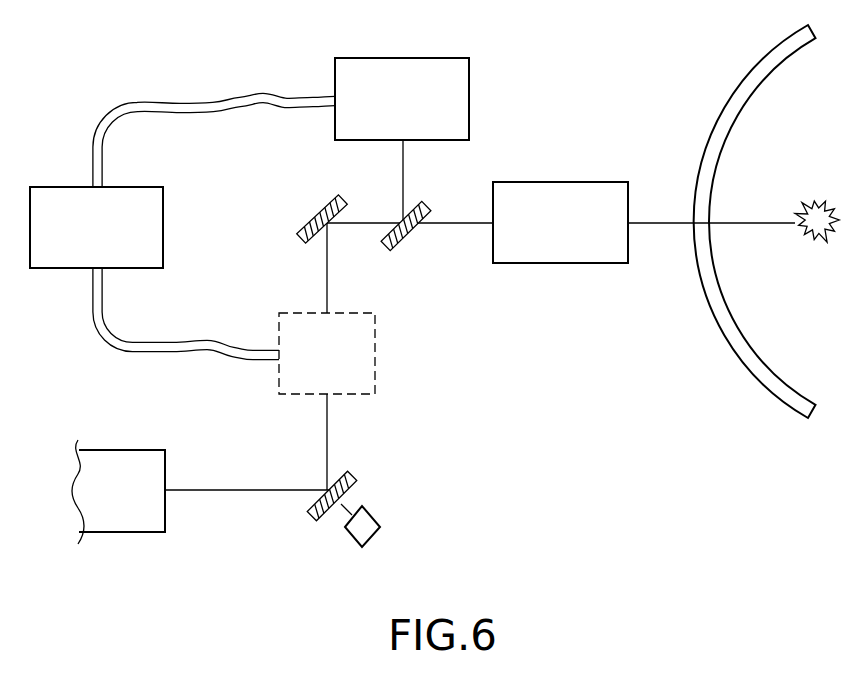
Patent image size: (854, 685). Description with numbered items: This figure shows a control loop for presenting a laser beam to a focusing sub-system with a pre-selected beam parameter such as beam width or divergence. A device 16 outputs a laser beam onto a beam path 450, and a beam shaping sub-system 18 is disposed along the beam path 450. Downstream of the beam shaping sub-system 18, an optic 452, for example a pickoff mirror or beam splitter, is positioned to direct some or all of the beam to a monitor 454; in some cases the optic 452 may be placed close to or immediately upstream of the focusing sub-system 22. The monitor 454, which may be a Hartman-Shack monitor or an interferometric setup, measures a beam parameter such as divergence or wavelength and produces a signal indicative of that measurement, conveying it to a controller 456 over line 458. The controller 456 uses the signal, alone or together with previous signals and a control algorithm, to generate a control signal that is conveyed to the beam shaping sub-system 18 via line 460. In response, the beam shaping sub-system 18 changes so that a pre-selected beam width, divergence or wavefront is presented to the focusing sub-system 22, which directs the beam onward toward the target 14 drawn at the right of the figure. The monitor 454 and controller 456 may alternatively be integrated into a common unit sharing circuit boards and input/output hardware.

The target / treatment site 14 is at (819, 244).
The device 16 is at (132, 503).
The beam shaping sub-system 18 is at (342, 366).
The focusing sub-system 22 is at (575, 236).
The beam path 450 is at (220, 490).
The optic 452 is at (400, 245).
The monitor 454 is at (424, 111).
The controller 456 is at (117, 240).
The line 458 is at (133, 104).
The line 460 is at (111, 335).